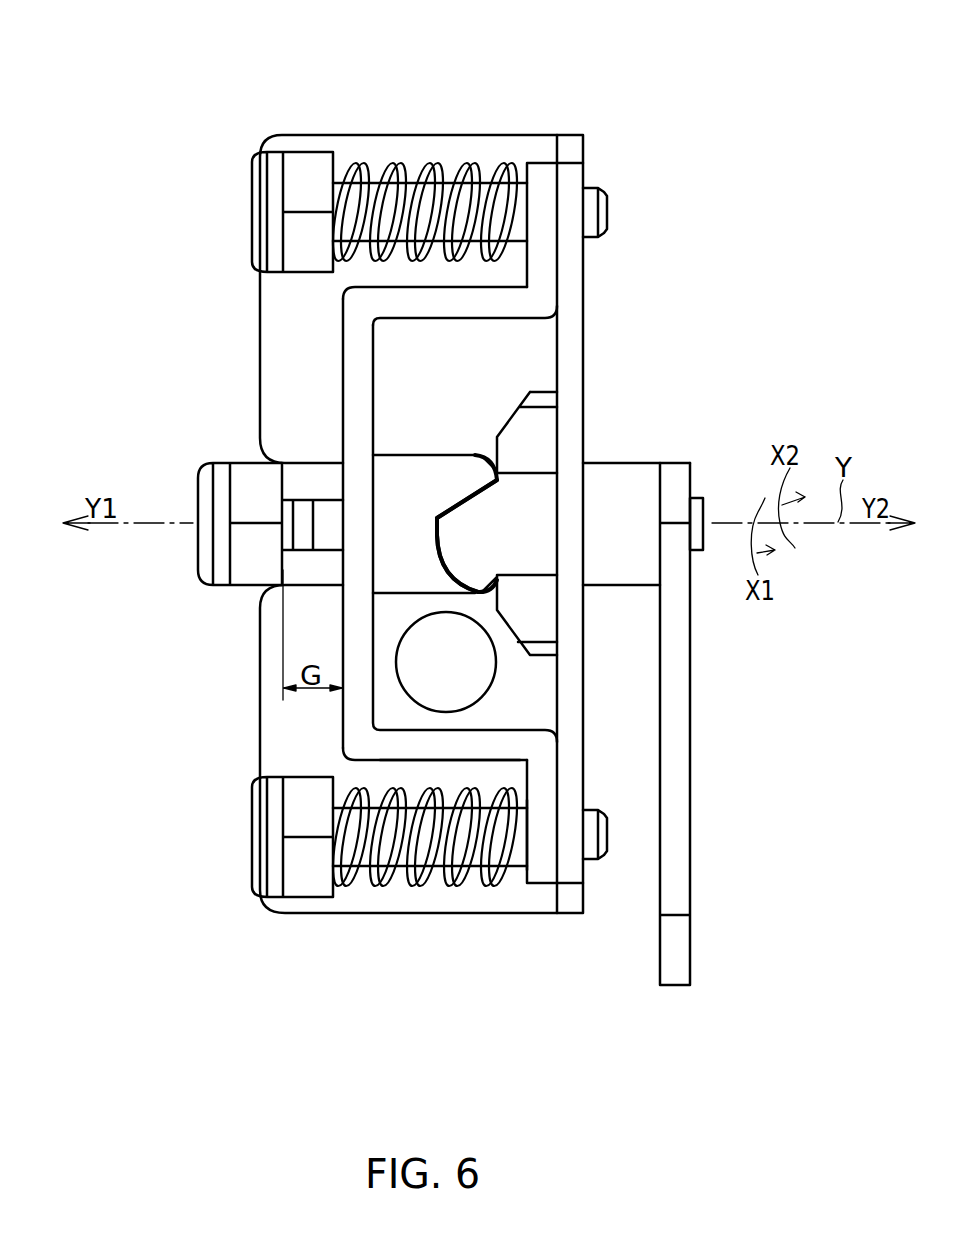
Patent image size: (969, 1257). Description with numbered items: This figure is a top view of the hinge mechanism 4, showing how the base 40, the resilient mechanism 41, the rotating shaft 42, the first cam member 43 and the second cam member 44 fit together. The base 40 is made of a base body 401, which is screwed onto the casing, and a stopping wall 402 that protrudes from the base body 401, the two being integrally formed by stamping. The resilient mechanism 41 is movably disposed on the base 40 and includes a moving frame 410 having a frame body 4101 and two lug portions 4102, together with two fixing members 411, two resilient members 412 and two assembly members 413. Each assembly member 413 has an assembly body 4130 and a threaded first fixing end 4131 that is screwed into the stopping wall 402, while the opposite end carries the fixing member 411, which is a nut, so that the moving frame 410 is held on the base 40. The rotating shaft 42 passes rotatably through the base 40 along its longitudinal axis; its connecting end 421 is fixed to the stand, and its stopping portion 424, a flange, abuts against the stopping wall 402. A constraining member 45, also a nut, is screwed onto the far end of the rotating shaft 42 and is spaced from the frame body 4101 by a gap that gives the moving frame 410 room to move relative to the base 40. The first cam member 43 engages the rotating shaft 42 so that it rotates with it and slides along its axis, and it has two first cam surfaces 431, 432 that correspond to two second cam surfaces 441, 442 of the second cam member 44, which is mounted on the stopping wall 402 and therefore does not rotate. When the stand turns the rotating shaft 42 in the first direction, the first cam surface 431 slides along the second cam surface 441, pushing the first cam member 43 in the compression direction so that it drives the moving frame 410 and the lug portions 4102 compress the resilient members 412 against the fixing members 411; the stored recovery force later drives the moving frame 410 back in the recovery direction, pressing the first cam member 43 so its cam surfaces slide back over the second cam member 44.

The hinge mechanism 4 is at (766, 44).
The base 40 is at (549, 470).
The base body 401 is at (517, 153).
The stopping wall 402 is at (567, 150).
The resilient mechanism 41 is at (585, 1022).
The moving frame 410 is at (474, 739).
The frame body 4101 is at (470, 745).
The lug portion 4102 is at (542, 870).
The fixing member 411 is at (308, 163).
The resilient member 412 is at (363, 165).
The assembly body 4130 is at (422, 185).
The assembly member 413 is at (652, 554).
The first fixing end 4131 is at (593, 210).
The rotating shaft 42 is at (695, 722).
The connecting end 421 is at (700, 512).
The stopping portion 424 is at (627, 478).
The first cam member 43 is at (401, 582).
The first cam surface 431 is at (470, 492).
The first cam surface 432 is at (437, 545).
The second cam member 44 is at (598, 564).
The second cam surface 441 is at (470, 492).
The second cam surface 442 is at (478, 592).
The constraining member 45 is at (220, 500).